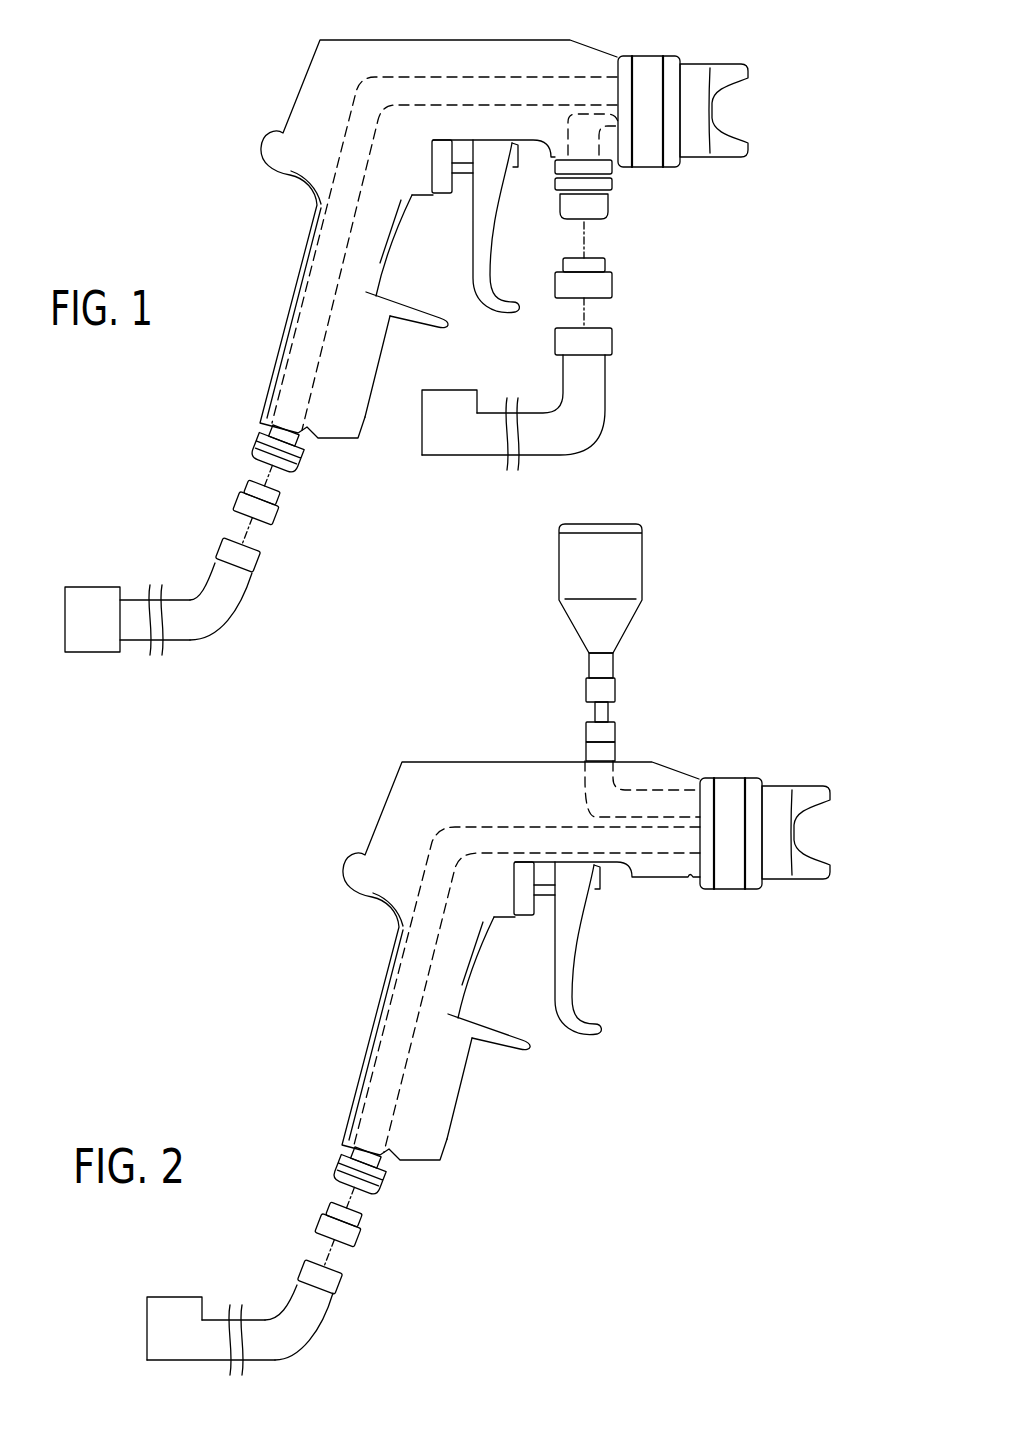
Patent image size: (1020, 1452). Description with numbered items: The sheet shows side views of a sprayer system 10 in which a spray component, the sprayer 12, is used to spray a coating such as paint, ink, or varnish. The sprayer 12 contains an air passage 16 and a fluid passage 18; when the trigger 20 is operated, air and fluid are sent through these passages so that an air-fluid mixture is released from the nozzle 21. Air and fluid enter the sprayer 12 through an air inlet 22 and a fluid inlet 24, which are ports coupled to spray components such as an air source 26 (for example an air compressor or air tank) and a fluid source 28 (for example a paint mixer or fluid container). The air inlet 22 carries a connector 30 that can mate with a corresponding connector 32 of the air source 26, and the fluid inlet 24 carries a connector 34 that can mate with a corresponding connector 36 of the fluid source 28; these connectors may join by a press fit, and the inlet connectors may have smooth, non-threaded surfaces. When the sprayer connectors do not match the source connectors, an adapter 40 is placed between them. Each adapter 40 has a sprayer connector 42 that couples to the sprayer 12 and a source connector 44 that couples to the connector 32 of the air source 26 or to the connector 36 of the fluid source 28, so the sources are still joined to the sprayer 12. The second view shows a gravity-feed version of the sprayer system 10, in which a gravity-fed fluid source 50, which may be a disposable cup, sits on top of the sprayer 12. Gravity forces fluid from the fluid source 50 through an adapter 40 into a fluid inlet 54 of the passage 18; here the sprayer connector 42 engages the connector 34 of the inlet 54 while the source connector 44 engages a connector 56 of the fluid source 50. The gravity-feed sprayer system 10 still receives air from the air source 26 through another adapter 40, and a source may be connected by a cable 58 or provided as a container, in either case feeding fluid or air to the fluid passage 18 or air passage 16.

In FIG. 1, the sprayer system 10 is at (554, 220).
In FIG. 2, the sprayer system 10 is at (596, 940).
In FIG. 1, the sprayer 12 is at (545, 44).
In FIG. 2, the sprayer 12 is at (510, 961).
In FIG. 1, the air passage 16 is at (326, 282).
In FIG. 2, the air passage 16 is at (507, 989).
In FIG. 1, the fluid passage 18 is at (619, 135).
In FIG. 2, the fluid passage 18 is at (608, 789).
In FIG. 1, the trigger 20 is at (494, 240).
In FIG. 2, the trigger 20 is at (582, 948).
In FIG. 1, the nozzle 21 is at (693, 83).
In FIG. 2, the nozzle 21 is at (769, 852).
In FIG. 1, the air inlet 22 is at (294, 437).
In FIG. 2, the air inlet 22 is at (376, 1158).
In FIG. 1, the fluid inlet 24 is at (583, 181).
In FIG. 1, the air source 26 is at (93, 587).
In FIG. 2, the air source 26 is at (176, 1297).
In FIG. 1, the fluid source 28 is at (460, 456).
In FIG. 1, the connector 30 is at (262, 444).
In FIG. 2, the connector 30 is at (343, 1165).
In FIG. 1, the connector 32 is at (258, 564).
In FIG. 2, the connector 32 is at (341, 1286).
In FIG. 1, the connector 34 is at (586, 216).
In FIG. 2, the connector 34 is at (615, 728).
In FIG. 1, the connector 36 is at (612, 343).
In FIG. 1, the adapter 40 is at (635, 301).
In FIG. 2, the adapter 40 is at (633, 697).
In FIG. 1, the sprayer connector 42 is at (562, 265).
In FIG. 2, the sprayer connector 42 is at (595, 712).
In FIG. 1, the source connector 44 is at (555, 286).
In FIG. 2, the source connector 44 is at (588, 690).
In FIG. 2, the gravity-fed fluid source 50 is at (643, 563).
In FIG. 2, the fluid inlet 54 is at (587, 748).
In FIG. 2, the connector 56 is at (613, 667).
In FIG. 2, the cable 58 is at (283, 1333).